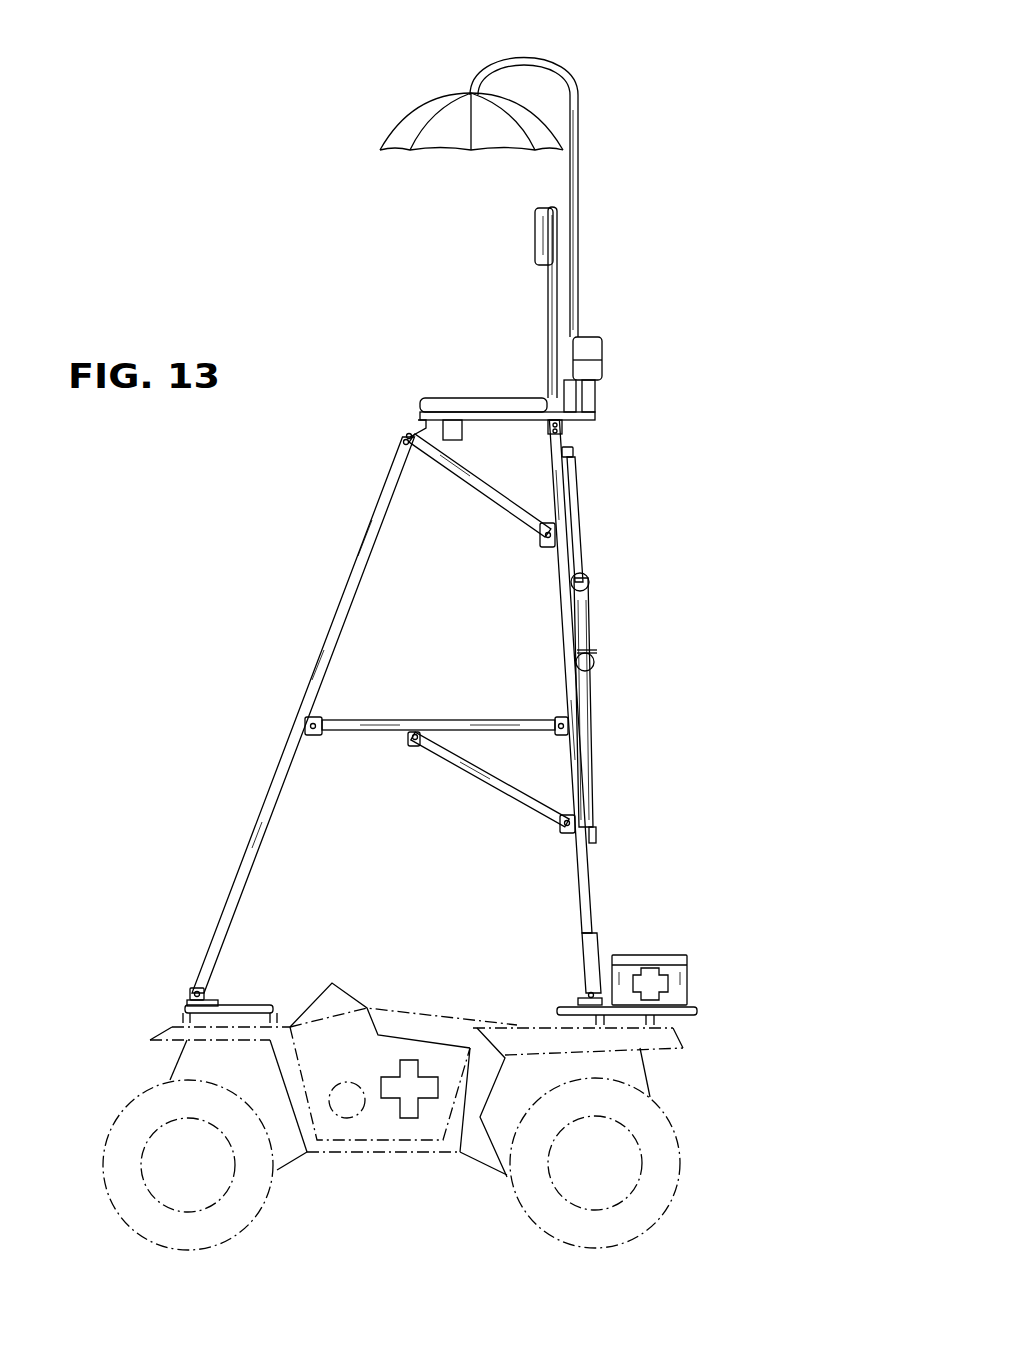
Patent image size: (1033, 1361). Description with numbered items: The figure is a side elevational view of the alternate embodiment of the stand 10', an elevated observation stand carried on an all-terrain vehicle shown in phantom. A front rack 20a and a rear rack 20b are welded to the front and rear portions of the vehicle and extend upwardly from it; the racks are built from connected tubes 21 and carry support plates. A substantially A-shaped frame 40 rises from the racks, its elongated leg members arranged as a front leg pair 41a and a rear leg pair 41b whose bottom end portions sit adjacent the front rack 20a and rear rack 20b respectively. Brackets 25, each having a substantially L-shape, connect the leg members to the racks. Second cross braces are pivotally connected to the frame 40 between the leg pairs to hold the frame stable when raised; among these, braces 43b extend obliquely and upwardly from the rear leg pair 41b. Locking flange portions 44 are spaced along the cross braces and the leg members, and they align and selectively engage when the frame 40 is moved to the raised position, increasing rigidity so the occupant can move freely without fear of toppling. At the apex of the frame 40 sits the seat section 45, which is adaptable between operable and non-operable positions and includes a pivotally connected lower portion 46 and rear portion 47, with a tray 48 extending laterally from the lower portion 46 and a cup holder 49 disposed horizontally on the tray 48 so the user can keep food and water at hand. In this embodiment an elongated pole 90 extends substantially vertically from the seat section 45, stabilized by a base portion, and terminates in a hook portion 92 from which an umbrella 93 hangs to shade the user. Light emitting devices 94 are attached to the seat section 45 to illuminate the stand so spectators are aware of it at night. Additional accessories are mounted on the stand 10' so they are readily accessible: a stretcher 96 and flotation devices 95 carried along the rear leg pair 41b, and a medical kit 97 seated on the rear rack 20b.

The stand 10' is at (124, 165).
The front rack 20a is at (255, 1005).
The rear rack 20b is at (698, 1012).
The connected tubes 21 is at (581, 946).
The L-shaped brackets 25 is at (192, 993).
The frame 40 is at (246, 883).
The front leg pair 41a is at (270, 790).
The rear leg pair 41b is at (590, 852).
The oblique second cross braces 43b is at (475, 778).
The locking flange portions 44 is at (546, 537).
The seat section 45 is at (548, 300).
The lower portion 46 is at (458, 397).
The rear portion 47 is at (534, 228).
The tray 48 is at (512, 412).
The cup holder 49 is at (410, 437).
The elongated pole 90 is at (579, 172).
The hook portion 92 is at (523, 56).
The umbrella 93 is at (402, 118).
The light emitting devices 94 is at (603, 355).
The flotation devices 95 is at (598, 658).
The stretcher 96 is at (611, 602).
The medical kit 97 is at (688, 974).